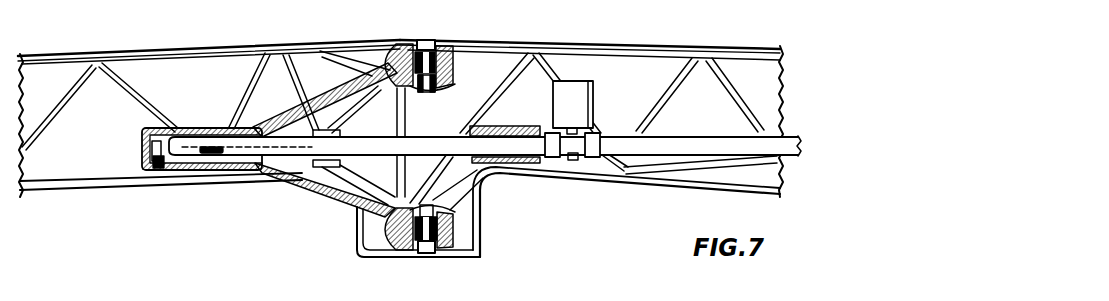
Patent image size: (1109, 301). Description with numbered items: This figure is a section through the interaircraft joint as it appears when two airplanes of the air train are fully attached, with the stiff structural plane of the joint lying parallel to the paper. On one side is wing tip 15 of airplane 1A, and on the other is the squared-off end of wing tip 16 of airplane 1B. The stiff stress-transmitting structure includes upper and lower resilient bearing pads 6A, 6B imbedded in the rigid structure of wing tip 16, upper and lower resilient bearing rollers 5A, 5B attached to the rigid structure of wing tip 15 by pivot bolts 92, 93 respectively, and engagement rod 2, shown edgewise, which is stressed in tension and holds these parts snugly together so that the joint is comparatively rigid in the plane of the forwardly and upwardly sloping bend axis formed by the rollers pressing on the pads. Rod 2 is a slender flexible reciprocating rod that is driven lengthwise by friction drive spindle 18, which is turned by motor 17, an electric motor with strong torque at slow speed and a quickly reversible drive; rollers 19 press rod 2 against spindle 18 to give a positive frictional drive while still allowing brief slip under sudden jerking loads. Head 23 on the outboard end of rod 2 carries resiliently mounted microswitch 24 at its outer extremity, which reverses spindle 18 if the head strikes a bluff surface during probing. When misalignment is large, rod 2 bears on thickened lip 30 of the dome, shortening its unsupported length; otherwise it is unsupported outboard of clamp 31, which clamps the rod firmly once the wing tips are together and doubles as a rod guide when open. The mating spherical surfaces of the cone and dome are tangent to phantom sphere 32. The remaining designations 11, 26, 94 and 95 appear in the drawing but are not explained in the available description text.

The airplane 1A is at (747, 44).
The airplane 1B is at (42, 55).
The engagement rod 2 is at (352, 112).
The upper resilient bearing roller 5A is at (443, 47).
The lower resilient bearing roller 5B is at (447, 236).
The upper resilient bearing pad 6A is at (393, 50).
The lower resilient bearing pad 6B is at (395, 244).
The direction of force 11 is at (160, 168).
The wing tip 15 is at (672, 49).
The wing tip 16 is at (183, 51).
The motor 17 is at (592, 83).
The friction drive spindle 18 is at (576, 160).
The rollers 19 is at (601, 134).
The head 23 is at (198, 142).
The microswitch 24 is at (145, 141).
The locking pin 26 is at (146, 158).
The lip 30 is at (352, 125).
The clamp 31 is at (529, 128).
The phantom sphere 32 is at (478, 120).
The pivot bolt 92 is at (423, 40).
The pivot bolt 93 is at (425, 258).
The lower housing 94 is at (399, 232).
The housing flange 95 is at (482, 218).